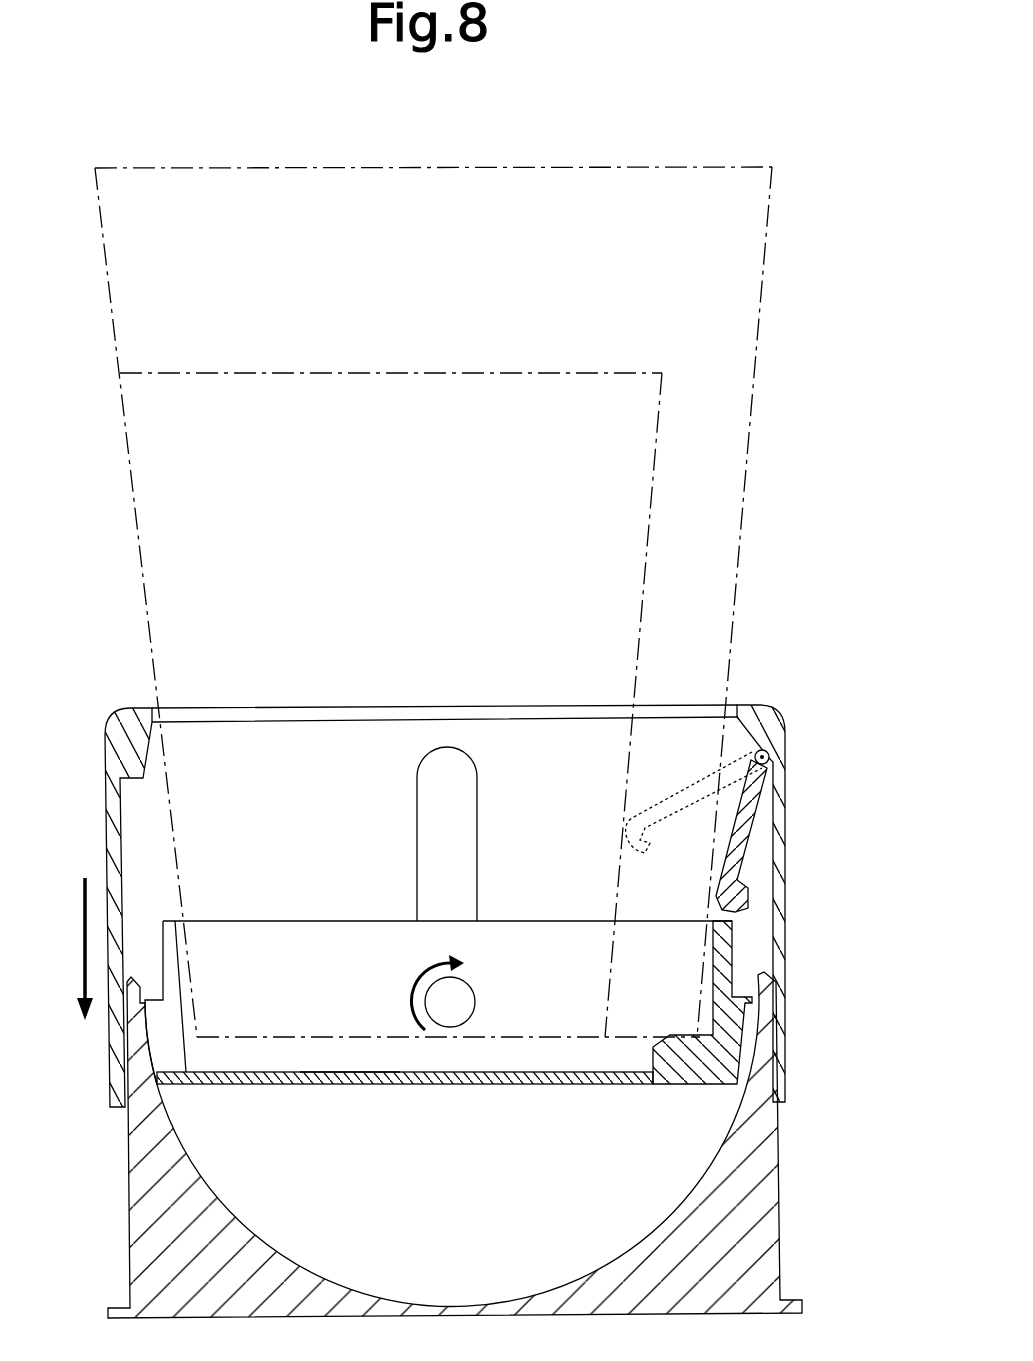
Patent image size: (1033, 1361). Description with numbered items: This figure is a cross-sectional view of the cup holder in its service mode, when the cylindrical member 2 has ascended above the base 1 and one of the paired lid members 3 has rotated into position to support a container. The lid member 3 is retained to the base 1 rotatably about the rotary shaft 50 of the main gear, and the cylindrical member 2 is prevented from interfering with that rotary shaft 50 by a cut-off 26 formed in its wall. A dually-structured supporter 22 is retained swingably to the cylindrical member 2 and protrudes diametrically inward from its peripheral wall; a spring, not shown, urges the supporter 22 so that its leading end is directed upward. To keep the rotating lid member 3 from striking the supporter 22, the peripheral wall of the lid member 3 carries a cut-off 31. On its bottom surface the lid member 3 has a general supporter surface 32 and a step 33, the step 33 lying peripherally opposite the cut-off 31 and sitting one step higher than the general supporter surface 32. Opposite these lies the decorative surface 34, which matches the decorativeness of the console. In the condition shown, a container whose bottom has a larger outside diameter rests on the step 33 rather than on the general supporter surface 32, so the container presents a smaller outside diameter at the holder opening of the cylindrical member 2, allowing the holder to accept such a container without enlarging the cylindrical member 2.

The base 1 is at (752, 1186).
The cylindrical member 2 is at (767, 712).
The lid member 3 is at (535, 1044).
The dually-structured supporter 22 is at (738, 840).
The cut-off 26 is at (455, 835).
The cut-off 31 is at (170, 1025).
The general supporter surface 32 is at (337, 1070).
The step 33 is at (678, 1035).
The decorative surface 34 is at (397, 1085).
The rotary shaft 50 is at (470, 995).